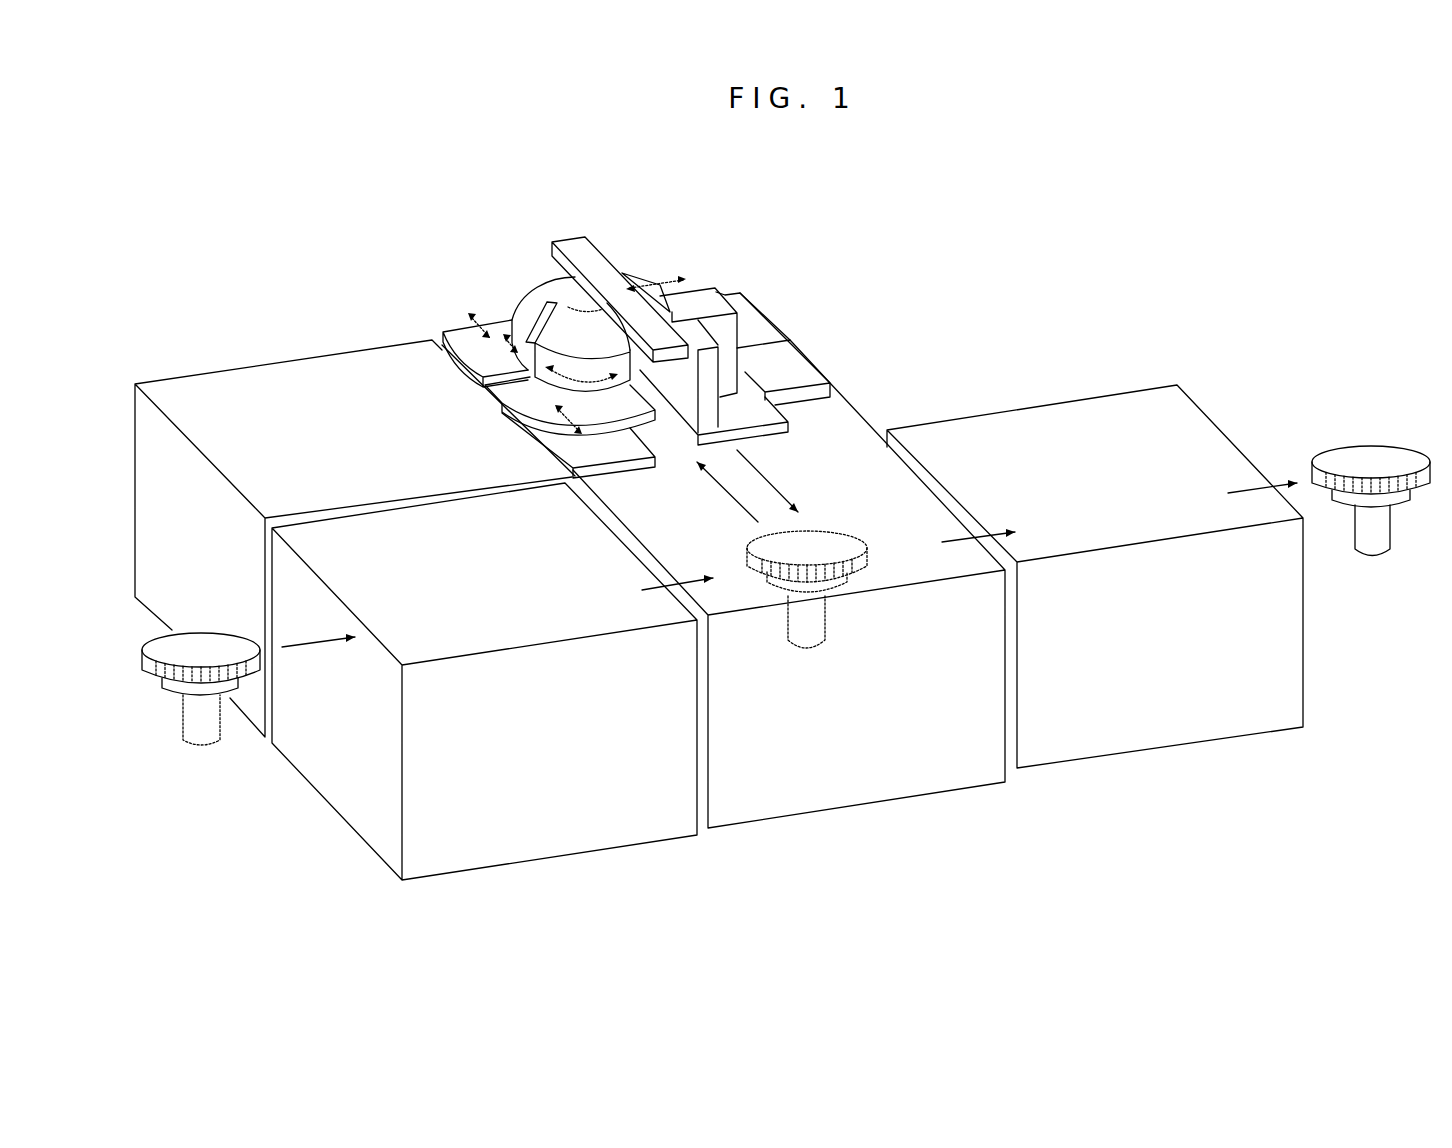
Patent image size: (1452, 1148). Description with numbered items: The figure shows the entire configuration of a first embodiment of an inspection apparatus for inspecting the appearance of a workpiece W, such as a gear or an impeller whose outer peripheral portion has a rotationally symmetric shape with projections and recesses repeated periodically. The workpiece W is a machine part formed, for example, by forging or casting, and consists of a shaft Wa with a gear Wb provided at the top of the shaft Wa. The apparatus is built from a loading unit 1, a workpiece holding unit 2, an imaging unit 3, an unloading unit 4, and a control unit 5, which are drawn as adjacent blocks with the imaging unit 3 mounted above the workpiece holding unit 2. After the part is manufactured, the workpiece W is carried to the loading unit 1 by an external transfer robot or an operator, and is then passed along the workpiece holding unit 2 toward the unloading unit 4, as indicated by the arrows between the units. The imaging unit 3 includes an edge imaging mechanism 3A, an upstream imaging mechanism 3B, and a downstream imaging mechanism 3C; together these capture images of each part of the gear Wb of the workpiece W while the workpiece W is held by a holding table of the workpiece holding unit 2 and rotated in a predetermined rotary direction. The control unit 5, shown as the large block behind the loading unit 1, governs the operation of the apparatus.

The loading unit 1 is at (545, 841).
The workpiece holding unit 2 is at (845, 788).
The imaging unit 3 is at (636, 311).
The edge imaging mechanism 3A is at (624, 274).
The upstream imaging mechanism 3B is at (537, 303).
The downstream imaging mechanism 3C is at (572, 320).
The unloading unit 4 is at (1160, 731).
The control unit 5 is at (292, 377).
The workpiece W is at (788, 642).
The shaft Wa is at (215, 687).
The gear Wb is at (180, 673).